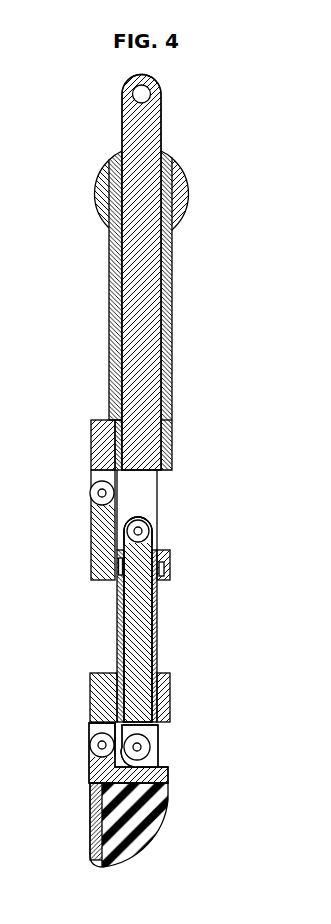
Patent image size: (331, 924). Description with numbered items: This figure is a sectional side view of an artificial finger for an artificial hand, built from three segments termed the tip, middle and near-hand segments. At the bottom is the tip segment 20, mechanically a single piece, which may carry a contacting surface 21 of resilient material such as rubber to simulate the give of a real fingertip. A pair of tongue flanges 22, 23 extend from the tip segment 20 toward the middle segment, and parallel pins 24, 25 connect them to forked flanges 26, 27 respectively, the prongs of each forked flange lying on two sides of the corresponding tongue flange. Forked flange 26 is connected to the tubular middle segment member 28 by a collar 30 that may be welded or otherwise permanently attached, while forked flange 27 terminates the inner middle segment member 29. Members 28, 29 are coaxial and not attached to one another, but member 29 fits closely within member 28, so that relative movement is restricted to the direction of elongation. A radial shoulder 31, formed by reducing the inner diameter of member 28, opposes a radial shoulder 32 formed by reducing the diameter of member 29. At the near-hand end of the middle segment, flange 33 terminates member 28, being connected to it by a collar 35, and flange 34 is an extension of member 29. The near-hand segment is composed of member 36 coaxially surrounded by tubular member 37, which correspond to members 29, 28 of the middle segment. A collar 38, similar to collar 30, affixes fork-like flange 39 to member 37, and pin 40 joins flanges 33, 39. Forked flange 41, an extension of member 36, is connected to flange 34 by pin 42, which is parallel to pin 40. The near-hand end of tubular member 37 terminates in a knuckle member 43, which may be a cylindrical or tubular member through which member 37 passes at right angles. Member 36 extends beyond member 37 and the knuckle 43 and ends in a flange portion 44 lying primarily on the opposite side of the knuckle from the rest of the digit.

The tip segment 20 is at (95, 800).
The contacting surface 21 is at (150, 835).
The tongue flange 22 is at (92, 763).
The tongue flange 23 is at (152, 760).
The pin 24 is at (100, 745).
The pin 25 is at (152, 743).
The forked flange 26 is at (98, 727).
The forked flange 27 is at (152, 731).
The middle segment member 28 is at (115, 627).
The middle segment member 29 is at (147, 637).
The collar 30 is at (170, 687).
The radial shoulder 31 is at (170, 580).
The radial shoulder 32 is at (163, 603).
The flange 33 is at (92, 533).
The flange 34 is at (150, 537).
The collar 35 is at (170, 558).
The member 36 is at (152, 273).
The tubular member 37 is at (170, 347).
The collar 38 is at (163, 427).
The fork-like flange 39 is at (102, 473).
The pin 40 is at (102, 492).
The forked flange 41 is at (145, 502).
The pin 42 is at (155, 540).
The knuckle member 43 is at (190, 193).
The flange portion 44 is at (152, 126).